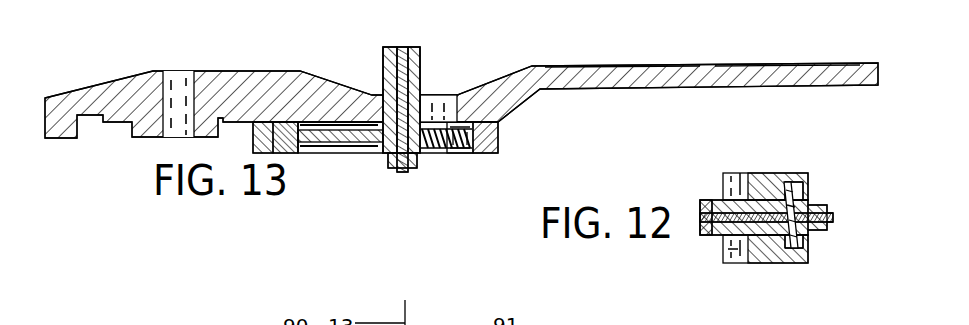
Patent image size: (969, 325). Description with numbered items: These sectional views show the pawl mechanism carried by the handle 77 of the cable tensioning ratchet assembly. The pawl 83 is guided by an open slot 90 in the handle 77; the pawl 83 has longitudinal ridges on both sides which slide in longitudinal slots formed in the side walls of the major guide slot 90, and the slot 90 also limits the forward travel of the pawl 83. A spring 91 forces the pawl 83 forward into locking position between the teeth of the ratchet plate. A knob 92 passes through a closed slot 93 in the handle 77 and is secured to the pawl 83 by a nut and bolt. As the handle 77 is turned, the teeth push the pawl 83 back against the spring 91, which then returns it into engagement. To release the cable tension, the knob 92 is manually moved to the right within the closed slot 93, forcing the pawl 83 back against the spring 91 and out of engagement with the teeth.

In FIG. 13, the handle 77 is at (238, 78).
In FIG. 12, the handle 77 is at (738, 257).
In FIG. 13, the pawl 83 is at (262, 135).
In FIG. 13, the spring 91 is at (463, 147).
In FIG. 13, the knob 92 is at (412, 53).
In FIG. 12, the knob 92 is at (718, 227).
In FIG. 13, the closed slot 93 is at (428, 103).
In FIG. 12, the open slot 90 is at (805, 202).